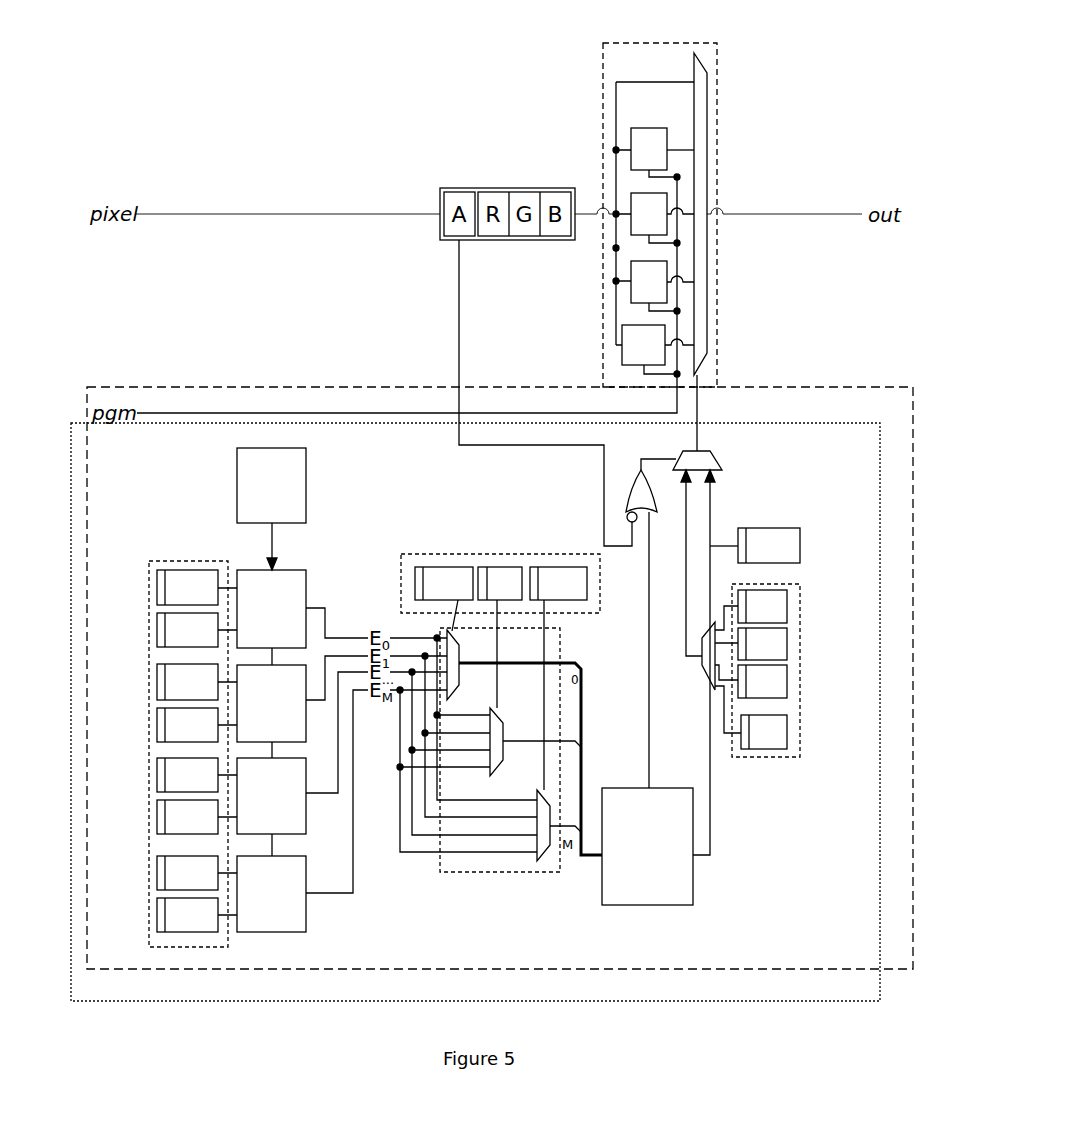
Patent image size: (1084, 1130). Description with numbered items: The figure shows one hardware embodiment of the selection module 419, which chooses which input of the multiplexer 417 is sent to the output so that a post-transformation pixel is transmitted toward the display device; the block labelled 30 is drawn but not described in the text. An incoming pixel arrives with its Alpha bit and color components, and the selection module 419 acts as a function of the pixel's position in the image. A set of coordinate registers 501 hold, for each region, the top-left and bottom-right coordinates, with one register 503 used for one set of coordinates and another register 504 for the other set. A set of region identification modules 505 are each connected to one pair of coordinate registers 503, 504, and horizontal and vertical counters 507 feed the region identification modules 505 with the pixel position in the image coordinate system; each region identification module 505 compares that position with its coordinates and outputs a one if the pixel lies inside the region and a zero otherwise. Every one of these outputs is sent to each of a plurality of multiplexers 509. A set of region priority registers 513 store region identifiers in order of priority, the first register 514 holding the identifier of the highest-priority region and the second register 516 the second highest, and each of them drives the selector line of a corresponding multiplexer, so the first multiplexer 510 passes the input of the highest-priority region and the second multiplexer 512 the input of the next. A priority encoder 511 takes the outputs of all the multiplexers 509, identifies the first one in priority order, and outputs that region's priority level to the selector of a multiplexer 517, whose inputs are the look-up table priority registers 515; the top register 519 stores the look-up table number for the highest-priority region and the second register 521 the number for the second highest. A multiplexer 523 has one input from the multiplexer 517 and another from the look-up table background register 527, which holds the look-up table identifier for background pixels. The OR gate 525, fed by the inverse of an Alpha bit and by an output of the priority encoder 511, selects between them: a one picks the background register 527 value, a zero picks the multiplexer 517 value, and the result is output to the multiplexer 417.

The multiplexer 417 is at (700, 65).
The selection module 419 is at (260, 1002).
The graphics processing block 30 is at (360, 969).
The coordinate registers 501 is at (171, 728).
The register 503 is at (157, 873).
The register 504 is at (157, 917).
The region identification module 505 is at (285, 912).
The horizontal and vertical counters 507 is at (305, 492).
The multiplexers 509 is at (500, 766).
The first multiplexer 510 is at (473, 665).
The priority encoder 511 is at (677, 875).
The second multiplexer 512 is at (514, 735).
The region priority registers 513 is at (500, 570).
The first register 514 is at (446, 566).
The look-up table priority registers 515 is at (789, 658).
The second register 516 is at (494, 566).
The multiplexer 517 is at (703, 665).
The top register 519 is at (787, 605).
The second register 521 is at (787, 640).
The multiplexer 523 is at (712, 457).
The OR gate 525 is at (633, 473).
The look-up table background register 527 is at (770, 529).